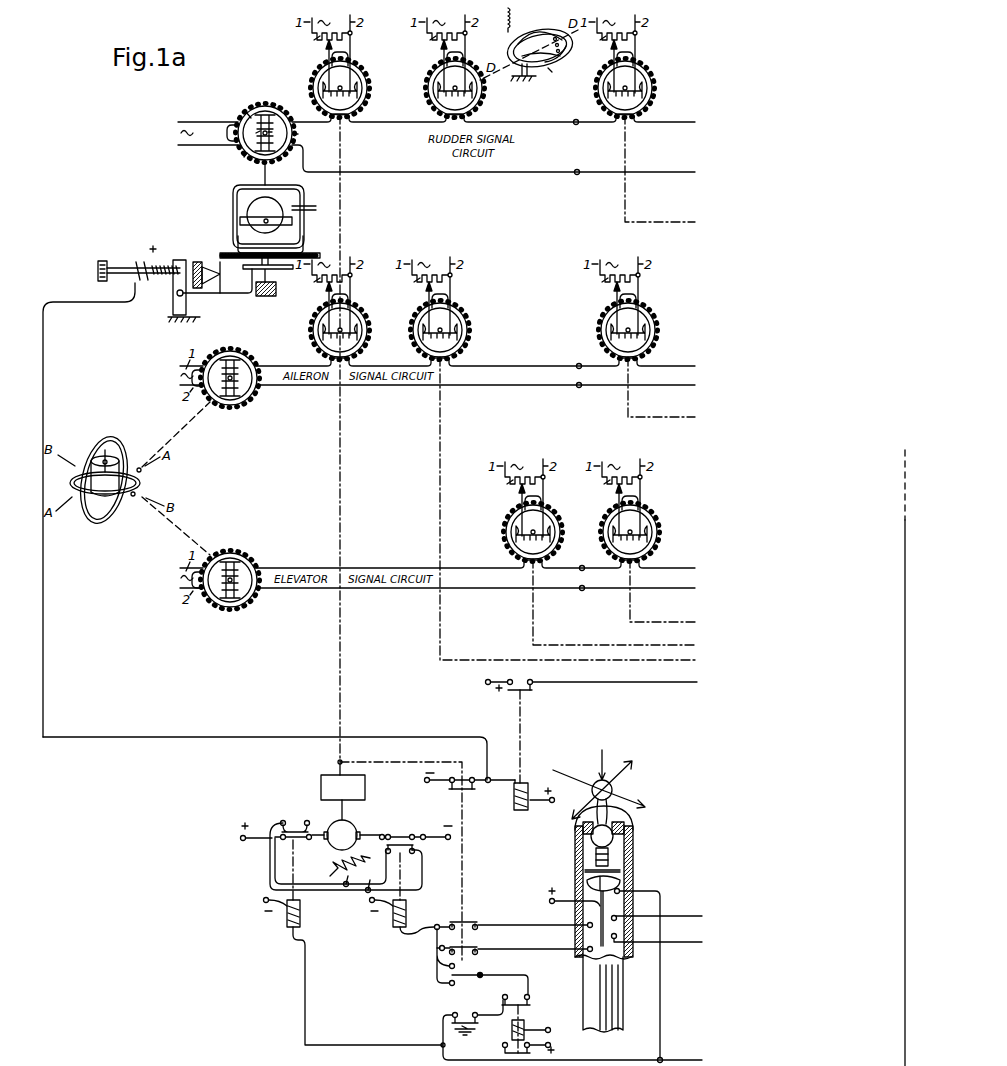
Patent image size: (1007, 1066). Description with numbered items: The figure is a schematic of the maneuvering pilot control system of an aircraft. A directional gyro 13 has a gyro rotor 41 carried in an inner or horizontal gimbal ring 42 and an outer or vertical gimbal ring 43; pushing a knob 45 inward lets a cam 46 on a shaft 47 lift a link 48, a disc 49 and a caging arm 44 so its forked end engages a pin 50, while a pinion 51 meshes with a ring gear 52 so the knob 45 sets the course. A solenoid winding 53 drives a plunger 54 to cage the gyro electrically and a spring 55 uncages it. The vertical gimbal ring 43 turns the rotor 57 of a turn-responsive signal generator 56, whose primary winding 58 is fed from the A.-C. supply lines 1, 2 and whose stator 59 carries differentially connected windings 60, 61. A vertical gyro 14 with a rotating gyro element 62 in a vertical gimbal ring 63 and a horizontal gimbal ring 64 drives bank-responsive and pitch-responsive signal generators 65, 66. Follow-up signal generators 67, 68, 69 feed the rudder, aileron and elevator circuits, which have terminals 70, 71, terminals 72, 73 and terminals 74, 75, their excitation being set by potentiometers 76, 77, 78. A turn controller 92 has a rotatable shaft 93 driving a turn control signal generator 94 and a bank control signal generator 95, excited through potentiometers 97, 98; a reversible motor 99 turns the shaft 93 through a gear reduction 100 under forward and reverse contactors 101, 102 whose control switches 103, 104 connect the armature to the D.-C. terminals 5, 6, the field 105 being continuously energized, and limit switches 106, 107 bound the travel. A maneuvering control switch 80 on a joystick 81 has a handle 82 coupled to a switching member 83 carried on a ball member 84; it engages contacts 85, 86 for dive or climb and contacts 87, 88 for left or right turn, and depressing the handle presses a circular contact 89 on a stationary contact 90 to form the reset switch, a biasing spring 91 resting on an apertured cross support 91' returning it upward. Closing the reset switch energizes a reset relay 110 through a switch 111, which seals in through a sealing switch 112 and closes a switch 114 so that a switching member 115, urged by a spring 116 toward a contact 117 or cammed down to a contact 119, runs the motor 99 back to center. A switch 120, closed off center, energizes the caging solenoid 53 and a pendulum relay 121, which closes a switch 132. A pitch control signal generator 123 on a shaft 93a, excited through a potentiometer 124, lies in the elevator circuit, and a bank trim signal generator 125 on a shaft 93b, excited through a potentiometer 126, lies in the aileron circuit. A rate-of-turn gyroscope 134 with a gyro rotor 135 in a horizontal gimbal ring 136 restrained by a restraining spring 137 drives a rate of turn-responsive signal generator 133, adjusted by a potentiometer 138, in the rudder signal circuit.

The A.-C. supply line 1 is at (182, 127).
The A.-C. supply line 2 is at (190, 148).
The positive D.-C. terminal 5 is at (242, 840).
The negative D.-C. terminal 6 is at (447, 841).
The directional gyro 13 is at (221, 221).
The vertical gyro 14 is at (110, 430).
The gyro rotor 41 is at (275, 209).
The inner or horizontal gimbal ring 42 is at (252, 216).
The outer or vertical gimbal ring 43 is at (304, 198).
The caging arm 44 is at (306, 236).
The knob 45 is at (101, 260).
The cam 46 is at (198, 261).
The shaft 47 is at (177, 259).
The link 48 is at (246, 296).
The disc 49 is at (278, 290).
The pin 50 is at (313, 202).
The pinion 51 is at (202, 266).
The ring gear 52 is at (222, 252).
The solenoid winding 53 is at (140, 282).
The plunger 54 is at (125, 266).
The spring 55 is at (152, 280).
The turn-responsive signal generator 56 is at (265, 99).
The rotor 57 is at (280, 132).
The primary or exciting winding 58 is at (249, 134).
The stator 59 is at (305, 134).
The stator winding 60 is at (246, 112).
The stator winding 61 is at (244, 157).
The rotating gyro element 62 is at (96, 504).
The vertical gimbal ring 63 is at (110, 455).
The horizontal gimbal ring 64 is at (141, 485).
The bank-responsive signal generator 65 is at (239, 340).
The pitch-responsive signal generator 66 is at (239, 542).
The follow-up signal generator 67 is at (662, 54).
The follow-up signal generator 68 is at (665, 296).
The follow-up signal generator 69 is at (672, 500).
The terminal 70 is at (575, 119).
The terminal 71 is at (576, 175).
The terminal 72 is at (578, 363).
The terminal 73 is at (578, 388).
The terminal 74 is at (581, 565).
The terminal 75 is at (581, 591).
The potentiometer 76 is at (598, 44).
The potentiometer 77 is at (600, 287).
The potentiometer 78 is at (601, 489).
The maneuvering control switch 80 is at (625, 736).
The joystick 81 is at (626, 1011).
The handle portion 82 is at (612, 792).
The switching member 83 is at (600, 936).
The ball member 84 is at (614, 838).
The contact 85 is at (587, 949).
The contact 86 is at (628, 915).
The contact 87 is at (630, 937).
The contact 88 is at (588, 925).
The circular contact 89 is at (622, 881).
The stationary contact 90 is at (622, 891).
The biasing spring 91 is at (582, 855).
The apertured cross support 91' is at (586, 867).
The turn controller 92 is at (307, 804).
The rotatable shaft 93 is at (344, 648).
The shaft 93a is at (668, 640).
The shaft 93b is at (682, 662).
The turn control signal generator 94 is at (375, 54).
The bank control signal generator 95 is at (375, 298).
The potentiometer 97 is at (314, 40).
The potentiometer 98 is at (314, 282).
The reversible motor 99 is at (353, 824).
The gear reduction 100 is at (326, 773).
The forward contactor 101 is at (286, 926).
The reverse contactor 102 is at (392, 926).
The control switch 103 is at (296, 840).
The control switch 104 is at (396, 842).
The field 105 is at (328, 872).
The limit switch 106 is at (470, 921).
The limit switch 107 is at (468, 946).
The reset relay 110 is at (525, 1026).
The switch 111 is at (466, 1015).
The sealing switch 112 is at (504, 1052).
The switch 114 is at (512, 993).
The switching member 115 is at (468, 974).
The spring 116 is at (476, 1031).
The contact 117 is at (449, 966).
The contact 119 is at (449, 985).
The switch 120 is at (460, 791).
The pendulum relay 121 is at (513, 796).
The pitch control signal generator 123 is at (577, 502).
The potentiometer 124 is at (502, 490).
The bank trim signal generator 125 is at (486, 298).
The potentiometer 126 is at (410, 288).
The switch 132 is at (526, 693).
The rate of turn-responsive signal generator 133 is at (437, 64).
The rate-of-turn gyroscope 134 is at (552, 22).
The gyro rotor 135 is at (551, 72).
The horizontal gimbal ring 136 is at (518, 52).
The restraining spring 137 is at (507, 19).
The potentiometer 138 is at (434, 44).